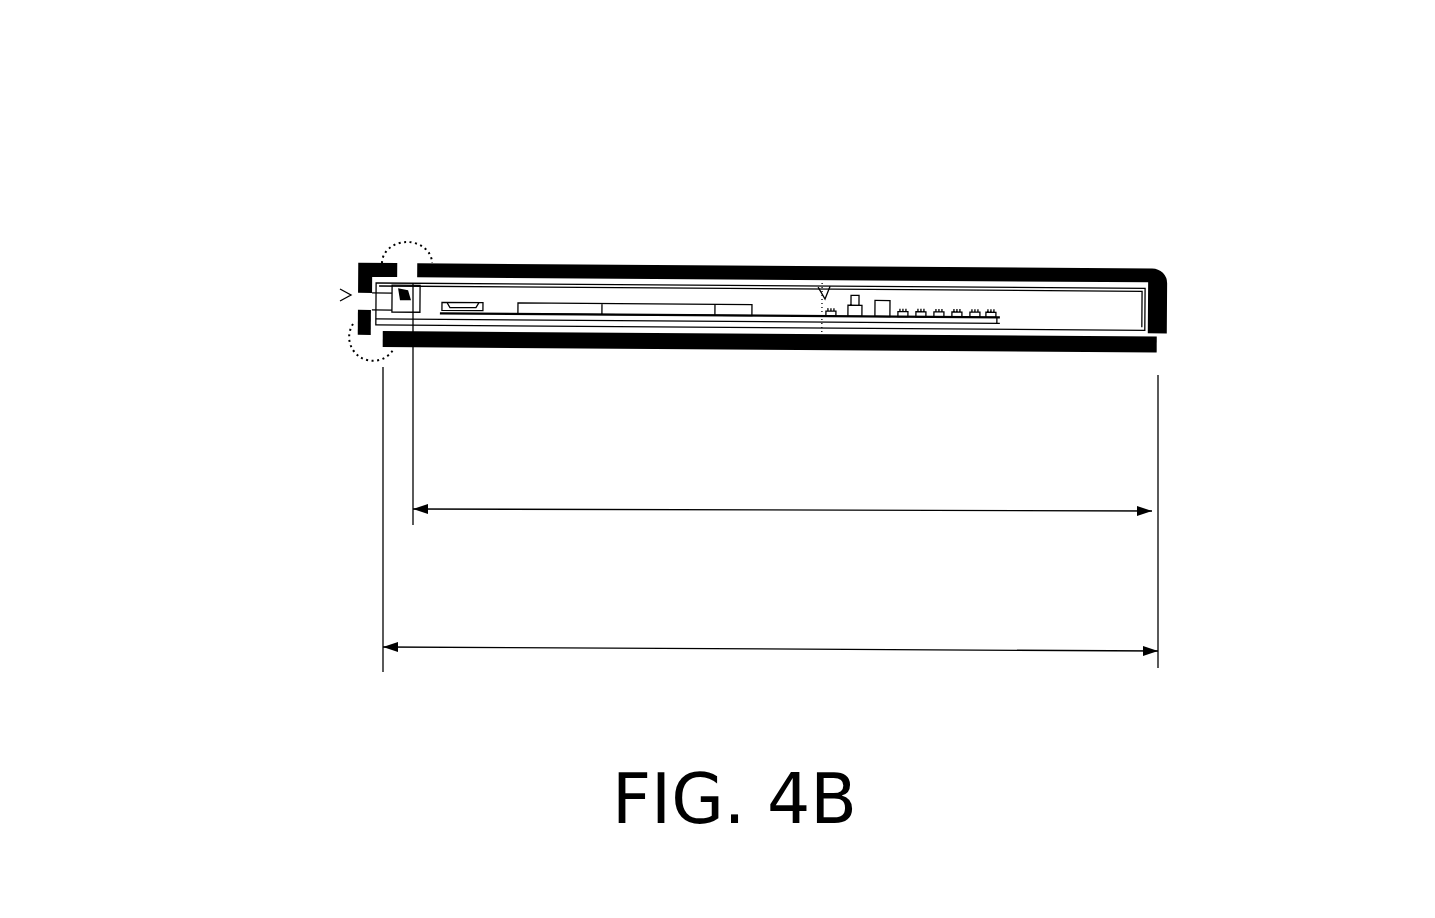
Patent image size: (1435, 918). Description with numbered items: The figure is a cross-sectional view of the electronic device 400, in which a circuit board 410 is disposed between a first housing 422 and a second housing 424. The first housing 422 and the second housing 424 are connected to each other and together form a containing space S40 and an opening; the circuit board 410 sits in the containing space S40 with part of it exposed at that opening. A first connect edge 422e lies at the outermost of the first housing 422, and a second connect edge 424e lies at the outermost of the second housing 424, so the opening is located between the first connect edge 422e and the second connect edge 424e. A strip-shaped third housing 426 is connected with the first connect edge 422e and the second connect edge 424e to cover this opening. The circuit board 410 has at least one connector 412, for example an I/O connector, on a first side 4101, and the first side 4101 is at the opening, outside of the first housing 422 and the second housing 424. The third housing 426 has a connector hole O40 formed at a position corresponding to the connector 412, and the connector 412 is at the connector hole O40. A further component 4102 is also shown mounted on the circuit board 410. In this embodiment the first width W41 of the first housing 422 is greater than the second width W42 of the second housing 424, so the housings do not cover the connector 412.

The electronic device 400 is at (1413, 589).
The circuit board 410 is at (755, 320).
The first side 4101 is at (398, 291).
The electronic component on display panel 4102 is at (681, 292).
The connector 412 is at (388, 303).
The second housing 424 is at (1035, 268).
The second connect edge 424e is at (402, 242).
The first housing 422 is at (630, 347).
The first connect edge 422e is at (356, 350).
The third housing 426 is at (361, 264).
The connector hole O40 is at (351, 295).
The containing space S40 is at (825, 295).
The second width W42 is at (785, 475).
The first width W41 is at (770, 519).